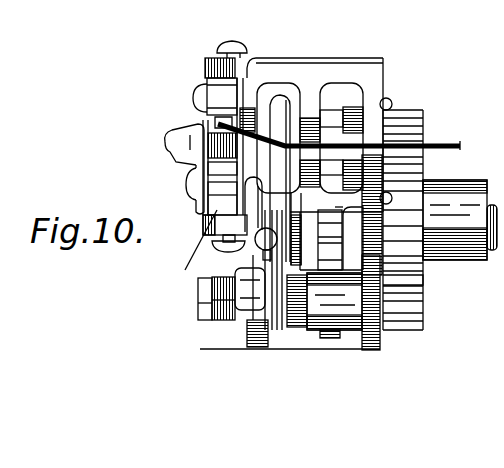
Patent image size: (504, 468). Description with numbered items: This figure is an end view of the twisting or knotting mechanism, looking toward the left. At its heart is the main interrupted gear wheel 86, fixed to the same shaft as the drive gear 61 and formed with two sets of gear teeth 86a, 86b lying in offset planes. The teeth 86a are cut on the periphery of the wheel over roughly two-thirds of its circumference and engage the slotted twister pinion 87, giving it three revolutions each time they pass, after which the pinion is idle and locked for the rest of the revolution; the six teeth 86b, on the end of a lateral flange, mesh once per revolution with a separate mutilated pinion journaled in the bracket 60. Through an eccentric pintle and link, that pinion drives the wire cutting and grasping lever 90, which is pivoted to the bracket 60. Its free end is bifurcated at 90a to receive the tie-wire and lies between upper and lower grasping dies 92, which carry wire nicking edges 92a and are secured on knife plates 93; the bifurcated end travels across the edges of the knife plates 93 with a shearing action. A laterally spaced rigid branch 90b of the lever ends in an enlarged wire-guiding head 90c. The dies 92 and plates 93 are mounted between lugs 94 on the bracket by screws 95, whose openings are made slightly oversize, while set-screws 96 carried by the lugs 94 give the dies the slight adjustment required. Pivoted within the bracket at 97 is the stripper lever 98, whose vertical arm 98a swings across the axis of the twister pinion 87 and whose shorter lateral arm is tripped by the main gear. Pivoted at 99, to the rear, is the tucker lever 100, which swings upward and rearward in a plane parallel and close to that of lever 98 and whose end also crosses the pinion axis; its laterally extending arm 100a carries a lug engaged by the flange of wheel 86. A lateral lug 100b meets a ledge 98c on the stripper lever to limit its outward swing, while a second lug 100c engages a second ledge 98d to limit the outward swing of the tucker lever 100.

The bracket 60 is at (352, 347).
The drive gear 61 is at (419, 272).
The main interrupted gear wheel 86 is at (339, 257).
The gear teeth 86a is at (330, 341).
The gear teeth 86b is at (285, 326).
The slotted twister pinion 87 is at (275, 190).
The wire cutting and grasping lever 90 is at (230, 155).
The bifurcation 90a is at (187, 128).
The rigid branch 90b is at (188, 180).
The wire-guiding head 90c is at (173, 140).
The grasping dies 92 is at (200, 103).
The wire nicking edges 92a is at (237, 187).
The knife plates 93 is at (238, 97).
The lugs 94 is at (205, 70).
The screws 95 is at (215, 100).
The set-screws 96 is at (217, 47).
The pivot 97 is at (253, 310).
The stripper lever 98 is at (268, 338).
The vertical arm 98a is at (287, 113).
The ledge 98c is at (292, 208).
The second ledge 98d is at (382, 188).
The pivot 99 is at (207, 322).
The tucker lever 100 is at (243, 255).
The laterally extending arm 100a is at (303, 233).
The lateral lug 100b is at (262, 320).
The second lug 100c is at (325, 233).